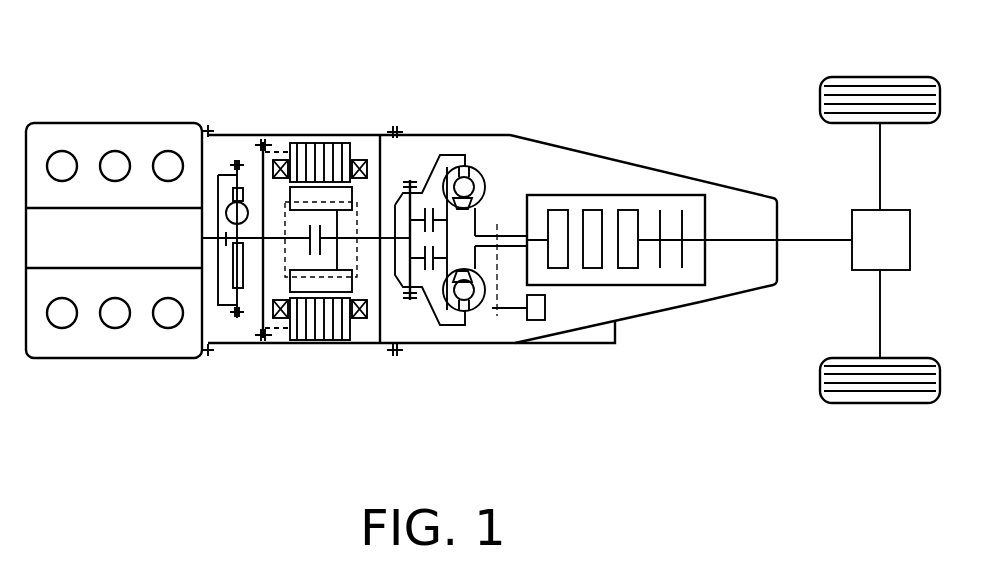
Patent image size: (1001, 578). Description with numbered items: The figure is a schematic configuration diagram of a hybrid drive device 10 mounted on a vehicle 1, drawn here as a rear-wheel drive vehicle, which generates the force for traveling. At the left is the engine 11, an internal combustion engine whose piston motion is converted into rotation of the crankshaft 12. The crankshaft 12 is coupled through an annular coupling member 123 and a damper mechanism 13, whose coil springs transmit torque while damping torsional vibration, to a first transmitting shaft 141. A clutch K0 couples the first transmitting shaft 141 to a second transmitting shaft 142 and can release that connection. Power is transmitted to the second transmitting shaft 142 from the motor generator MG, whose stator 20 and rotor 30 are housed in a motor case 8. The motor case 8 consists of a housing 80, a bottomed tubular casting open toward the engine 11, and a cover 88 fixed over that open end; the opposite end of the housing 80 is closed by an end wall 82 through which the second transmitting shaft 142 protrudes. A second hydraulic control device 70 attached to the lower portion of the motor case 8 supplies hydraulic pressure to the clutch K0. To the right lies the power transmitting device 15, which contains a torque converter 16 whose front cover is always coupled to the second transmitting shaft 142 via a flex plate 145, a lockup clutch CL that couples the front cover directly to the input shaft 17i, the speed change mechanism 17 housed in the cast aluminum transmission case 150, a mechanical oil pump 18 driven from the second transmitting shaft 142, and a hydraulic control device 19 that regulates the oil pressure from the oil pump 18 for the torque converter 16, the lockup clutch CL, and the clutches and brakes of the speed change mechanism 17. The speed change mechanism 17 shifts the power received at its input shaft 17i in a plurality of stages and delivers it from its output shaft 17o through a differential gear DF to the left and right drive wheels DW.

The vehicle 1 is at (770, 417).
The hybrid drive device 10 is at (453, 262).
The engine 11 is at (76, 359).
The crankshaft 12 is at (212, 240).
The damper mechanism 13 is at (212, 167).
The coupling member 123 is at (216, 290).
The motor case 8 is at (285, 418).
The cover 88 is at (260, 312).
The housing 80 is at (299, 343).
The motor generator MG is at (320, 242).
The stator 20 is at (334, 165).
The rotor 30 is at (307, 195).
The first transmitting shaft 141 is at (284, 222).
The second hydraulic control device 70 is at (357, 213).
The clutch K0 is at (314, 265).
The end wall 82 is at (383, 147).
The torque converter 16 is at (455, 243).
The second transmitting shaft 142 is at (366, 242).
The flex plate 145 is at (393, 258).
The lockup clutch CL is at (434, 241).
The power transmitting device 15 is at (660, 165).
The transmission case 150 is at (670, 308).
The hydraulic control device 19 is at (609, 330).
The mechanical oil pump 18 is at (552, 318).
The speed change mechanism 17 is at (710, 214).
The input shaft 17i is at (535, 238).
The output shaft 17o is at (808, 238).
The differential gear DF is at (851, 262).
The drive wheels DW is at (880, 76).